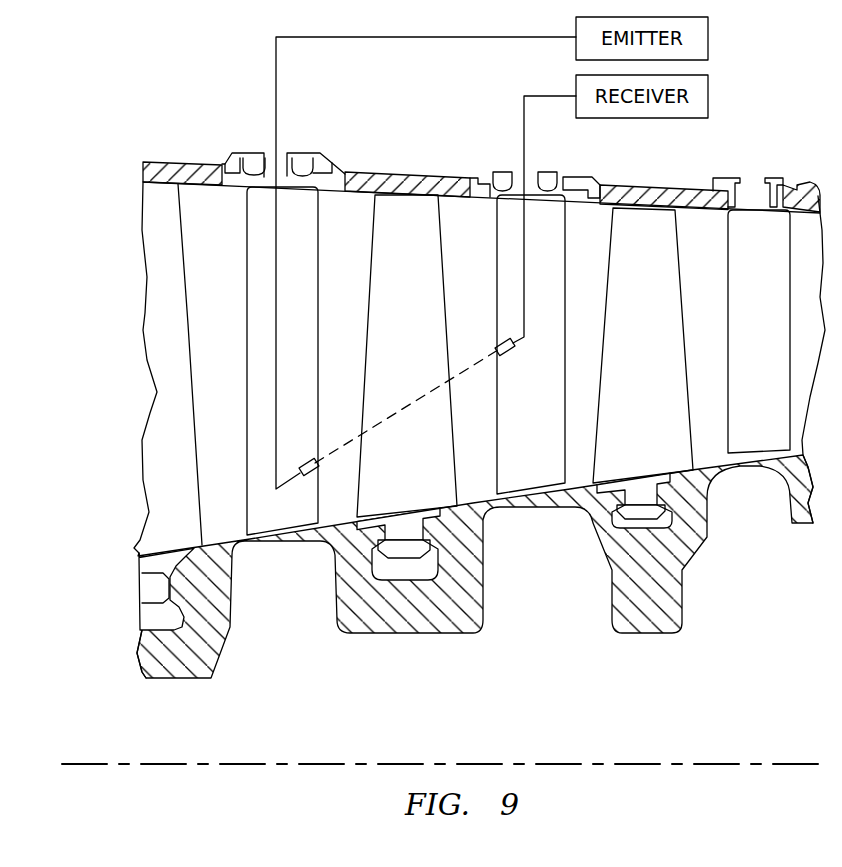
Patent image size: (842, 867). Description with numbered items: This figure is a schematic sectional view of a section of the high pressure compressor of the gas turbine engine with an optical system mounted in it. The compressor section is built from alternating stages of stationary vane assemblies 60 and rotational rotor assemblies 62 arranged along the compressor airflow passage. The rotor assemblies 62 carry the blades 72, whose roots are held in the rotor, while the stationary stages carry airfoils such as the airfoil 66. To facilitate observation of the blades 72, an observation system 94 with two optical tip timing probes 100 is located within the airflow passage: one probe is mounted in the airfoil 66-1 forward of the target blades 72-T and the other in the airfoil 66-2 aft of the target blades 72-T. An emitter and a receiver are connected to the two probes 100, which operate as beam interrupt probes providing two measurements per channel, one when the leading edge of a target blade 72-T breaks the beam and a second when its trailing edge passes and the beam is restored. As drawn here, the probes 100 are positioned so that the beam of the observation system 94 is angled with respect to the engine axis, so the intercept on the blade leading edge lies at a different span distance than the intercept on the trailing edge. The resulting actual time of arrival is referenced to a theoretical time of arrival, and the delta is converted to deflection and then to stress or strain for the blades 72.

The stationary vane assemblies 60 is at (293, 135).
The rotational rotor assemblies 62 is at (180, 639).
The airfoil 66 is at (777, 341).
The airfoil 66-1 is at (291, 506).
The airfoil 66-2 is at (531, 462).
The blades 72 is at (187, 474).
The target blades 72-T is at (431, 472).
The observation system 94 is at (461, 400).
The optical tip timing probes 100 is at (310, 462).